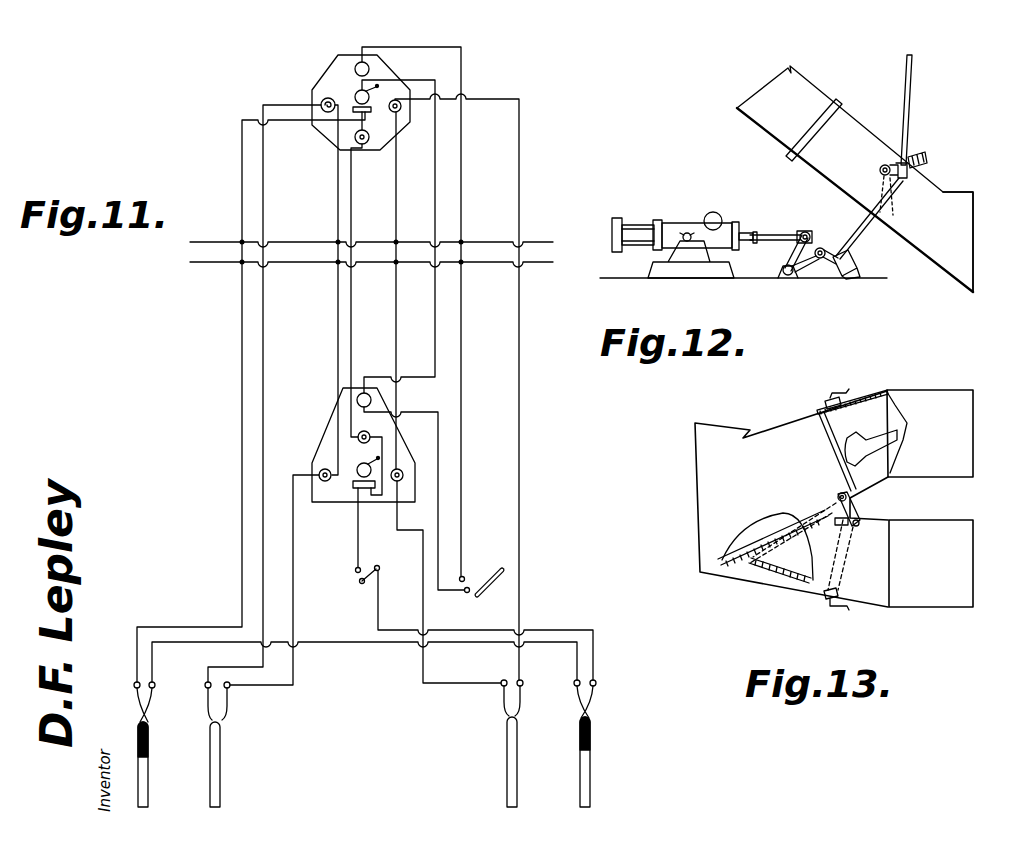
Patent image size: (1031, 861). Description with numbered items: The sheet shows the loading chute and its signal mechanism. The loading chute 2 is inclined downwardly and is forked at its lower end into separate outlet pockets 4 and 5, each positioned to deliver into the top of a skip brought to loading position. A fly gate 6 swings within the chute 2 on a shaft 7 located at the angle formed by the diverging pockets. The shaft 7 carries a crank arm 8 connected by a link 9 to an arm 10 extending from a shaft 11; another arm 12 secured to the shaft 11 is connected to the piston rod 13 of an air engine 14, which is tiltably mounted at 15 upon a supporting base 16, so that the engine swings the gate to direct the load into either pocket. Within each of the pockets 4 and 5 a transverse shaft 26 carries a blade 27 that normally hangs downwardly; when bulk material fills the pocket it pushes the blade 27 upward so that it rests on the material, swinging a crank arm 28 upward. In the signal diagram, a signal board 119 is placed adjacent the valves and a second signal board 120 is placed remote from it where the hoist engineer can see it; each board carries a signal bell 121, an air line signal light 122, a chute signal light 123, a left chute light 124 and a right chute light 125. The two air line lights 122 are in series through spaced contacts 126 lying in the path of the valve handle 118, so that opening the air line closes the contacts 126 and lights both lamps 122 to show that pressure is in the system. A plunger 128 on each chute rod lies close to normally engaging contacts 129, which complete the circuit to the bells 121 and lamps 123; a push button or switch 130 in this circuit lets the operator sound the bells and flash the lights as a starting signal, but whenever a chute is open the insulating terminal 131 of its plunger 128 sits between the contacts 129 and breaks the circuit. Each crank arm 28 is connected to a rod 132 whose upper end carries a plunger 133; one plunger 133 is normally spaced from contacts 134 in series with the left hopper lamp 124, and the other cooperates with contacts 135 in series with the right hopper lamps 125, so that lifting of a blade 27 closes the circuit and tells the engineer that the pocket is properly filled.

In FIG. 12, the loading chute 2 is at (797, 88).
In FIG. 13, the loading chute 2 is at (707, 466).
In FIG. 12, the outlet pocket 4 is at (963, 213).
In FIG. 13, the outlet pocket 4 is at (930, 433).
In FIG. 13, the outlet pocket 5 is at (931, 563).
In FIG. 13, the fly gate 6 is at (773, 558).
In FIG. 12, the shaft 7 is at (859, 242).
In FIG. 13, the shaft 7 is at (836, 496).
In FIG. 12, the crank arm 8 is at (854, 271).
In FIG. 13, the crank arm 8 is at (861, 502).
In FIG. 12, the link 9 is at (827, 247).
In FIG. 13, the link 9 is at (851, 528).
In FIG. 12, the arm 10 is at (807, 262).
In FIG. 12, the shaft 11 is at (786, 275).
In FIG. 12, the arm 12 is at (802, 232).
In FIG. 12, the piston rod 13 is at (763, 233).
In FIG. 12, the air engine 14 is at (700, 226).
In FIG. 12, the tiltable mounting 15 is at (686, 234).
In FIG. 12, the supporting base 16 is at (693, 257).
In FIG. 12, the shaft 26 is at (882, 164).
In FIG. 13, the shaft 26 is at (840, 427).
In FIG. 12, the blade 27 is at (893, 212).
In FIG. 13, the blade 27 is at (903, 433).
In FIG. 12, the crank arm 28 is at (880, 172).
In FIG. 13, the crank arm 28 is at (845, 392).
In FIG. 11, the handle 118 is at (495, 585).
In FIG. 11, the signal board 119 is at (412, 457).
In FIG. 11, the signal board 120 is at (325, 80).
In FIG. 11, the signal bell 121 is at (363, 90).
In FIG. 11, the air line signal light 122 is at (357, 63).
In FIG. 11, the chute signal light 123 is at (366, 144).
In FIG. 11, the left chute light 124 is at (321, 472).
In FIG. 11, the right chute light 125 is at (403, 477).
In FIG. 11, the spaced contacts 126 is at (469, 576).
In FIG. 11, the plunger 128 is at (149, 777).
In FIG. 11, the contacts 129 is at (145, 713).
In FIG. 11, the push button or switch 130 is at (364, 587).
In FIG. 11, the insulating terminal 131 is at (149, 743).
In FIG. 12, the rod 132 is at (910, 93).
In FIG. 11, the plunger 133 is at (221, 767).
In FIG. 11, the contacts 134 is at (224, 710).
In FIG. 11, the contacts 135 is at (503, 702).